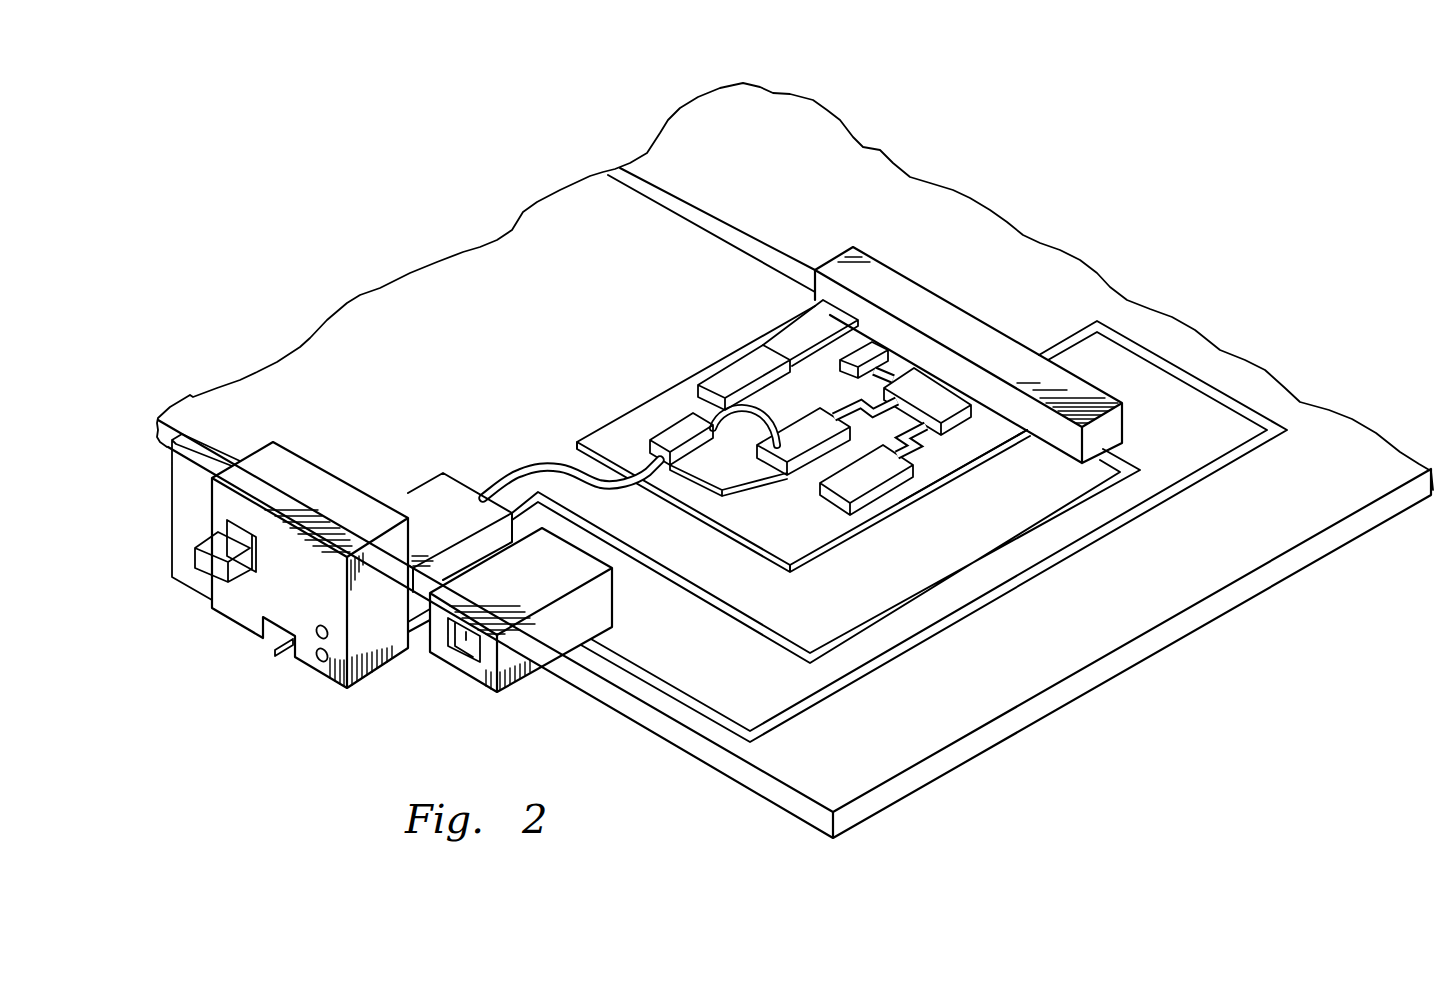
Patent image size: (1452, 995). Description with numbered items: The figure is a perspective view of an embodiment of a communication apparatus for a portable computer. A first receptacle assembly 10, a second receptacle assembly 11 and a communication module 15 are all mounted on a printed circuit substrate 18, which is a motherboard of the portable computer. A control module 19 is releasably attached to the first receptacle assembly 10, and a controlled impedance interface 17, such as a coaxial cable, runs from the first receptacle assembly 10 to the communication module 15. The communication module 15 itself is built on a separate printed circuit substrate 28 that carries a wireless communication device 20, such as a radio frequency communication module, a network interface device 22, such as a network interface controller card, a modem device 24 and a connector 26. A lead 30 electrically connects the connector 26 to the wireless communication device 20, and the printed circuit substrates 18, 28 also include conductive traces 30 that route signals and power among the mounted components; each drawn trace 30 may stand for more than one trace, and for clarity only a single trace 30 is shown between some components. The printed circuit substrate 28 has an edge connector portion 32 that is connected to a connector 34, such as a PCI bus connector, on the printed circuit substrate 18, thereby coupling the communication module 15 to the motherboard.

The first receptacle assembly 10 is at (415, 493).
The second receptacle assembly 11 is at (552, 652).
The communication module 15 is at (955, 458).
The controlled impedance interface 17 is at (515, 476).
The printed circuit substrate 18 is at (1014, 683).
The control module 19 is at (300, 468).
The wireless communication device 20 is at (810, 442).
The network interface device 22 is at (870, 474).
The modem device 24 is at (733, 372).
The connector 26 is at (668, 433).
The printed circuit substrate 28 is at (798, 545).
The conductive trace 30 is at (807, 342).
The edge connector portion 32 is at (1015, 432).
The connector 34 is at (985, 333).